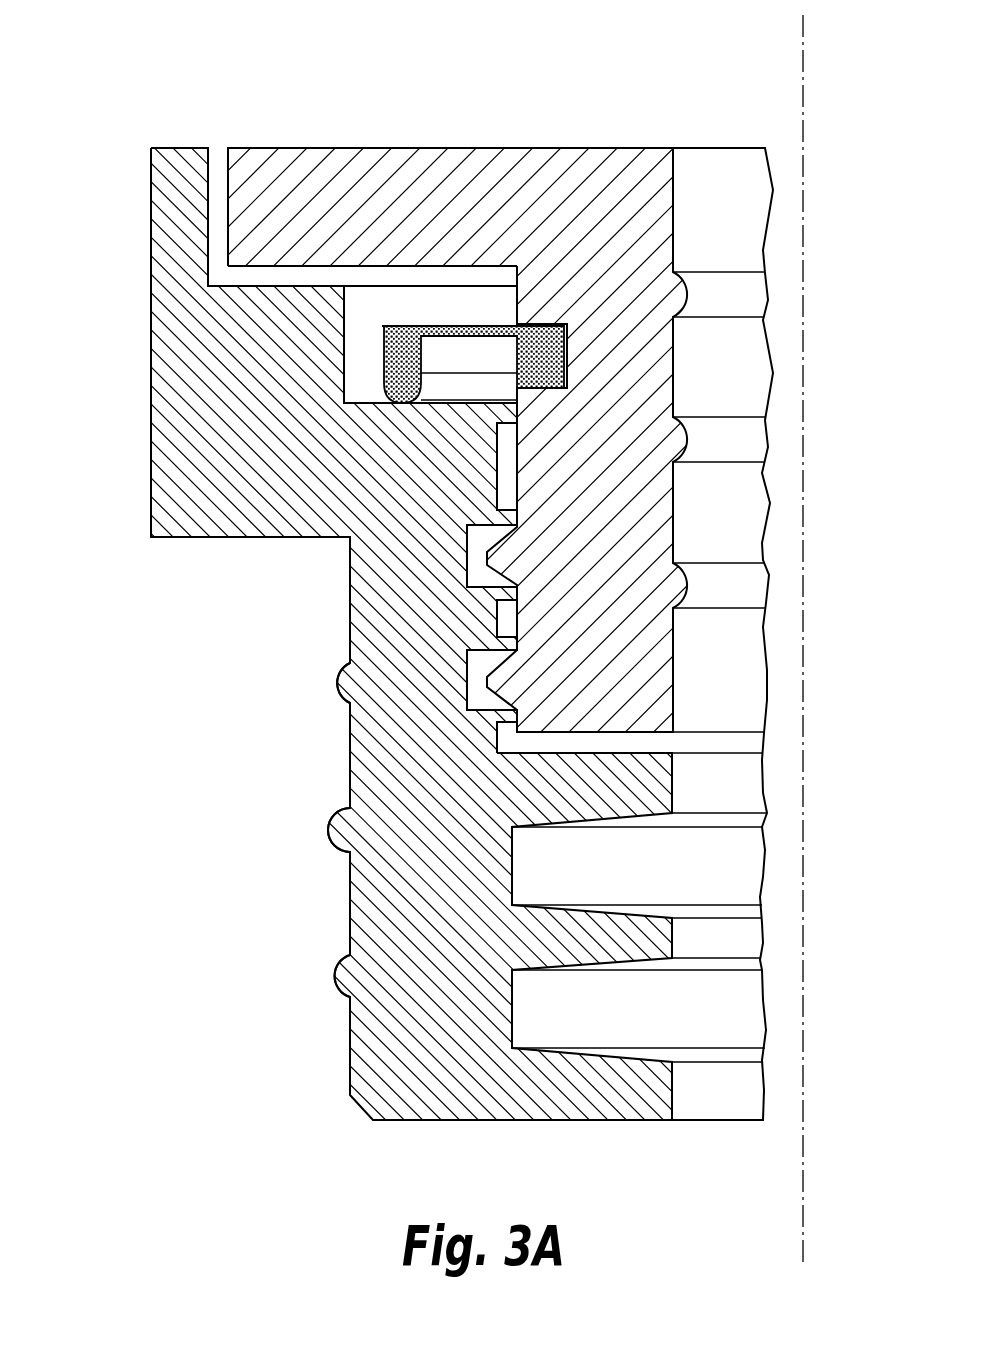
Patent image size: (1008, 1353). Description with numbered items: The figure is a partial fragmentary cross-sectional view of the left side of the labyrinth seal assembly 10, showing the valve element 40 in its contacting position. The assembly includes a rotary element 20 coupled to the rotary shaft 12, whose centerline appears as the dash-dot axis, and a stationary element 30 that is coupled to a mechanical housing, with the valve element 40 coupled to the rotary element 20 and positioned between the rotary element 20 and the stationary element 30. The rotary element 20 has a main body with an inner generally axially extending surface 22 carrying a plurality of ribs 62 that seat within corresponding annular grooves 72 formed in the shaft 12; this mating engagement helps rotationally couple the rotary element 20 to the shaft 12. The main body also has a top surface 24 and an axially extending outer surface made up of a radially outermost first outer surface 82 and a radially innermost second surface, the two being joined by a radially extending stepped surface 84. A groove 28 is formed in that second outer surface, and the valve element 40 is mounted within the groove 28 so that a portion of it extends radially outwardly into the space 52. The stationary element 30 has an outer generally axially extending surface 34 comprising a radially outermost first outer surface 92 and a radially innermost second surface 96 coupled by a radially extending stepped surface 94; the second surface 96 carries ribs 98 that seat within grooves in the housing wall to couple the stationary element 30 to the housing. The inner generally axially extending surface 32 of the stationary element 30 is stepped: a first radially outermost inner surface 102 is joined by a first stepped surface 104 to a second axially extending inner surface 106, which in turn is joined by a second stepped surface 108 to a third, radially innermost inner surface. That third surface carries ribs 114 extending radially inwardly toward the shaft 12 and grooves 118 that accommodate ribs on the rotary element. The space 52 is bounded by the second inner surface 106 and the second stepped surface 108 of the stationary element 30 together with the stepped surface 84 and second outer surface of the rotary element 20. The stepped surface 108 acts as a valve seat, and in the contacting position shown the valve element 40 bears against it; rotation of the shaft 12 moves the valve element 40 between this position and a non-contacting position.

The labyrinth seal assembly 10 is at (559, 113).
The rotary shaft 12 is at (803, 108).
The rotary element 20 is at (378, 146).
The inner generally axially extending surface 22 is at (674, 225).
The top surface 24 is at (596, 148).
The groove 28 is at (556, 324).
The stationary element 30 is at (150, 312).
The inner generally axially extending surface 32 is at (705, 1100).
The outer generally axially extending surface 34 is at (256, 657).
The valve element 40 is at (478, 324).
The space 52 is at (438, 318).
The ribs 62 is at (676, 417).
The annular grooves 72 is at (688, 434).
The first outer surface 82 is at (227, 186).
The stepped surface 84 is at (277, 267).
The first outer surface 92 is at (150, 412).
The stepped surface 94 is at (210, 537).
The second outer surface 96 is at (350, 883).
The ribs 98 is at (338, 678).
The first inner surface 102 is at (210, 212).
The first stepped surface 104 is at (229, 284).
The second inner surface 106 is at (345, 328).
The second stepped surface 108 is at (364, 402).
The ribs 114 is at (672, 790).
The grooves 118 is at (467, 553).